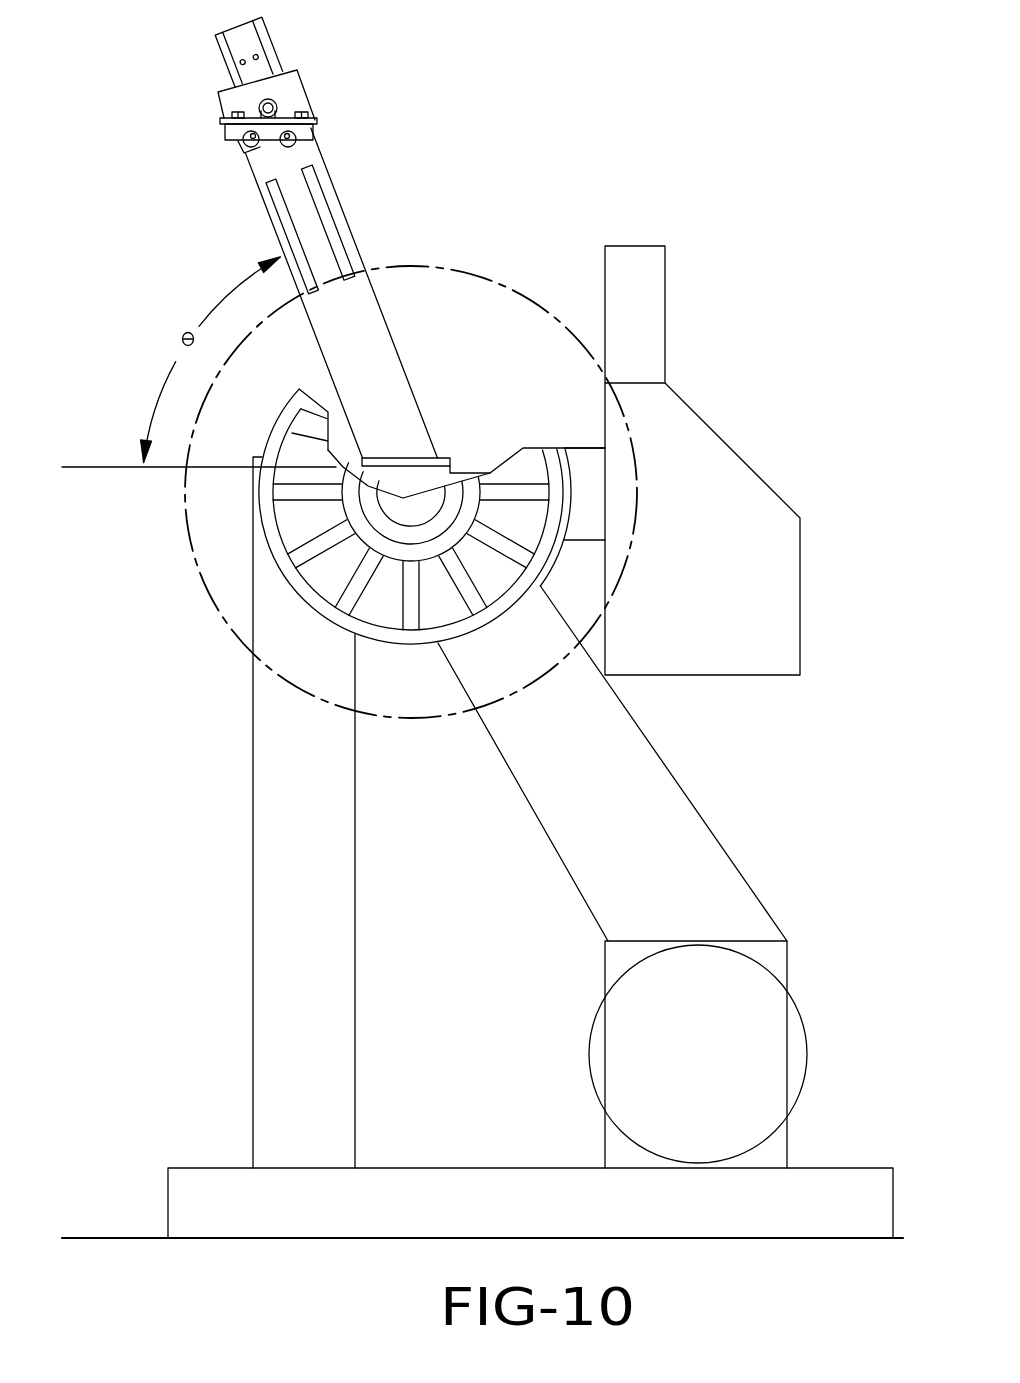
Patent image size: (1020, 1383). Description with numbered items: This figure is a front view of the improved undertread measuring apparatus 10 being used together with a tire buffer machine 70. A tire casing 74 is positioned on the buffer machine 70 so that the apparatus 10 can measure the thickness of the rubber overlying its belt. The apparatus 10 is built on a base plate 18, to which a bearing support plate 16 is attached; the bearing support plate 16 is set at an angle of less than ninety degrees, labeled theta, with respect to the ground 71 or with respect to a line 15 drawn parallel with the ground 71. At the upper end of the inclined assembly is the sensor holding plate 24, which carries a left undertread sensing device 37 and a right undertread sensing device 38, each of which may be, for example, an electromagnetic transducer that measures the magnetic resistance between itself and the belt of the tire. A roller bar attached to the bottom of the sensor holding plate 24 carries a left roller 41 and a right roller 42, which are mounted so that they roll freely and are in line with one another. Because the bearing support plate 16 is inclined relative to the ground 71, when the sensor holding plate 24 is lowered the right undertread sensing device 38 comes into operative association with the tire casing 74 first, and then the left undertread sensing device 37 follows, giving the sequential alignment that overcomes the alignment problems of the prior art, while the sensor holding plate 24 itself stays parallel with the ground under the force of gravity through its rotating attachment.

The improved undertread measuring apparatus 10 is at (337, 53).
The line 15 is at (146, 464).
The bearing support plate 16 is at (405, 378).
The base plate 18 is at (433, 460).
The sensor holding plate 24 is at (286, 120).
The left undertread sensing device 37 is at (232, 128).
The right undertread sensing device 38 is at (305, 132).
The left roller 41 is at (243, 142).
The right roller 42 is at (293, 143).
The tire buffer machine 70 is at (677, 807).
The ground 71 is at (100, 1238).
The tire casing 74 is at (198, 566).